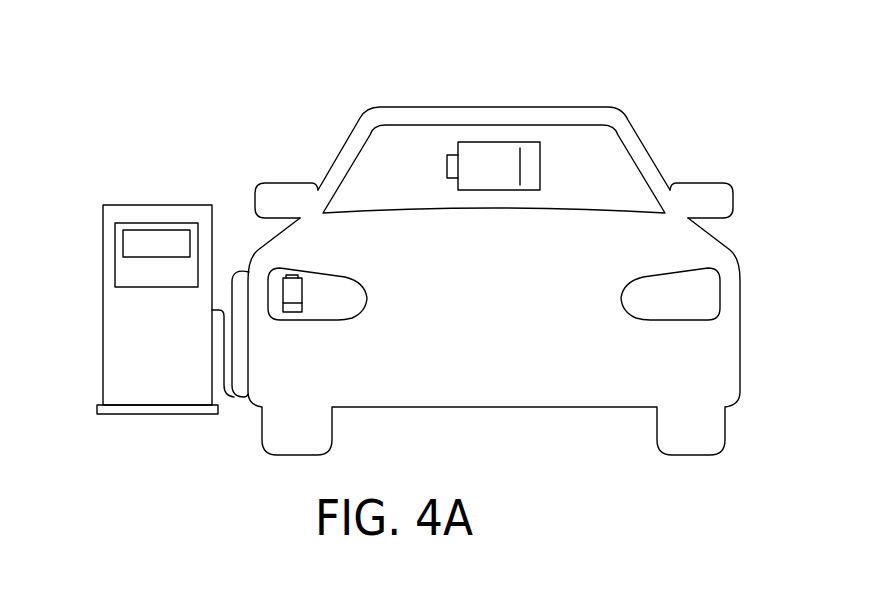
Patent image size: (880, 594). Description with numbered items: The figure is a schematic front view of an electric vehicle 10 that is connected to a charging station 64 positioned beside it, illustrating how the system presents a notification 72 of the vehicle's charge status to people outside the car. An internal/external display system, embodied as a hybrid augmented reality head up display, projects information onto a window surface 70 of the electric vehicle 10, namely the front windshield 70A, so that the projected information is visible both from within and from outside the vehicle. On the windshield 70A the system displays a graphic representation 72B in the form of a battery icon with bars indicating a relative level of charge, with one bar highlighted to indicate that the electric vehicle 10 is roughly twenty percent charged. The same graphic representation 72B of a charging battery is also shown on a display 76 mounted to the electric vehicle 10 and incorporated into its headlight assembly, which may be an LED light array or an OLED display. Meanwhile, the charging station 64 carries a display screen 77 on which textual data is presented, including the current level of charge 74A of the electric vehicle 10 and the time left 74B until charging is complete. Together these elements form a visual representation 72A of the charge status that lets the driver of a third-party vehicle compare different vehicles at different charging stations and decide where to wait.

The electric vehicle 10 is at (507, 318).
The charging station 64 is at (153, 397).
The window surface 70 is at (446, 155).
The windshield 70A is at (392, 153).
The notification 72 is at (335, 272).
The visual representation 72A is at (152, 229).
The graphic representation 72B is at (498, 160).
The current level of charge 74A is at (133, 267).
The time left until charging is complete 74B is at (130, 247).
The display 76 is at (353, 297).
The display screen 77 is at (193, 223).